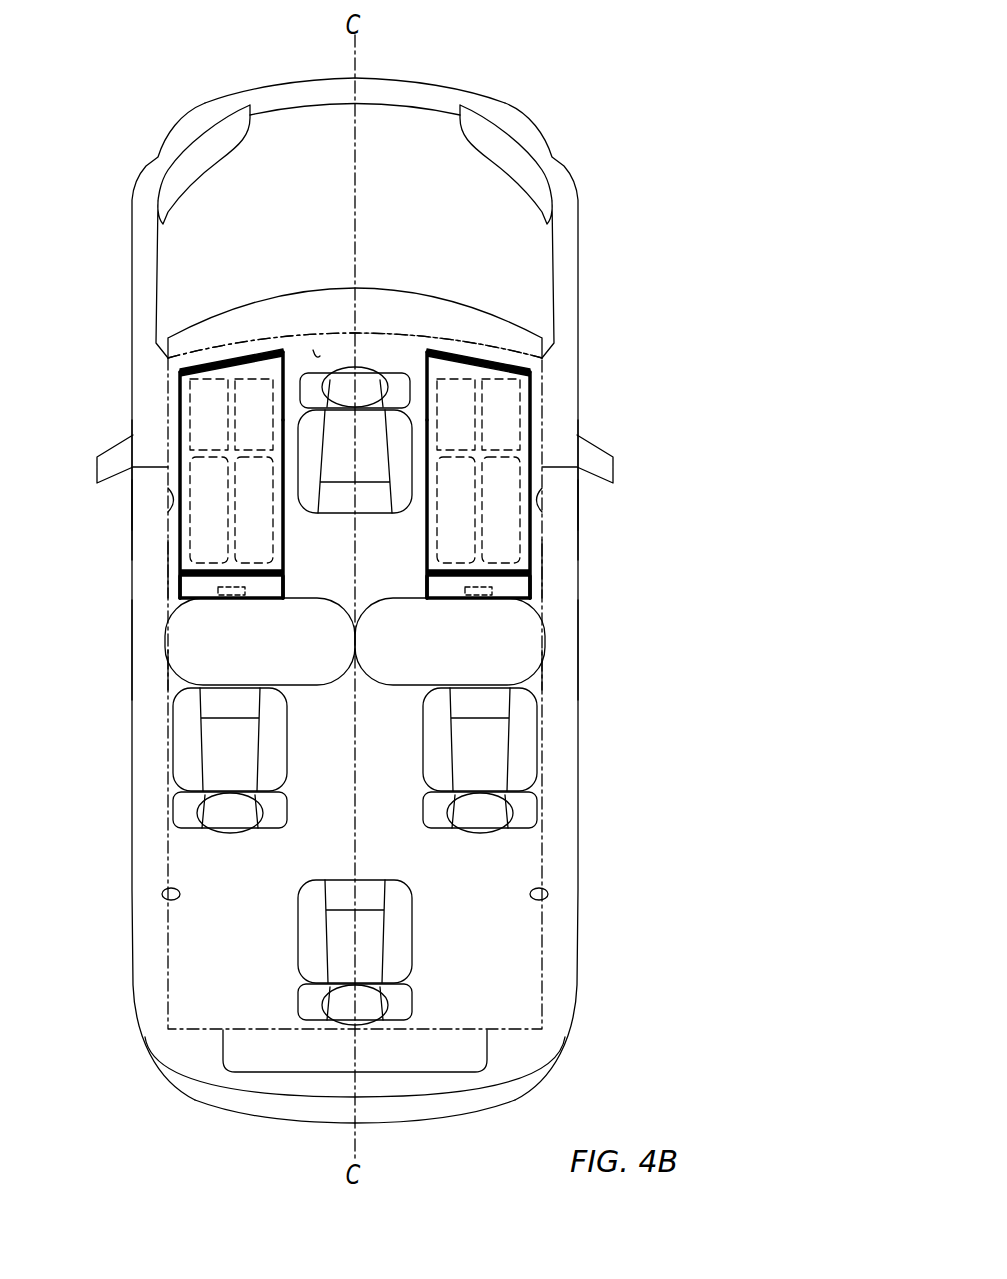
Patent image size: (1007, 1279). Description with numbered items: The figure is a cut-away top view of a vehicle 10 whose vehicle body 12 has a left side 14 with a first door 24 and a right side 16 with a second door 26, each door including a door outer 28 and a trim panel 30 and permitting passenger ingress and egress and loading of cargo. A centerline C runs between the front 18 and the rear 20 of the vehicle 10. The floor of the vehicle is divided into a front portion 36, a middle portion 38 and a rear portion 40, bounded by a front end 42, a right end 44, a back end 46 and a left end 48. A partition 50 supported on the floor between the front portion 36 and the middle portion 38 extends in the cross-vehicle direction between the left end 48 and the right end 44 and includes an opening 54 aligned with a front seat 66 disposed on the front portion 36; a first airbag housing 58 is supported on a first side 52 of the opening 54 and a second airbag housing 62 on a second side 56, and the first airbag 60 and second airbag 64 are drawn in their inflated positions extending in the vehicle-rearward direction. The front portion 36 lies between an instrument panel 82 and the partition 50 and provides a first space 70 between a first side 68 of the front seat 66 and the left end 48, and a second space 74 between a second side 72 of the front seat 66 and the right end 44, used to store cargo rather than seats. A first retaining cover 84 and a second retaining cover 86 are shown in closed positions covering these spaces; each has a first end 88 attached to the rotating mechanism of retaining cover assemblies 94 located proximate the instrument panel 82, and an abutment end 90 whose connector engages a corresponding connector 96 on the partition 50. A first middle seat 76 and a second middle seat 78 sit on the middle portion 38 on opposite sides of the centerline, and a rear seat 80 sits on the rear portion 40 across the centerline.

The vehicle 10 is at (365, 590).
The vehicle body 12 is at (355, 603).
The left side 14 is at (128, 766).
The right side 16 is at (582, 766).
The front 18 is at (380, 76).
The rear 20 is at (305, 1128).
The first door 24 is at (130, 572).
The second door 26 is at (582, 572).
The door outer 28 is at (132, 650).
The trim panel 30 is at (176, 560).
The front portion 36 is at (352, 497).
The middle portion 38 is at (355, 765).
The rear portion 40 is at (393, 952).
The front end 42 is at (322, 354).
The right end 44 is at (540, 495).
The back end 46 is at (430, 1018).
The left end 48 is at (170, 495).
The partition 50 is at (176, 590).
The first side 52 is at (357, 448).
The opening 54 is at (365, 600).
The second side 56 is at (506, 505).
The first airbag housing 58 is at (250, 593).
The first airbag 60 is at (175, 676).
The second airbag housing 62 is at (460, 593).
The second airbag 64 is at (535, 676).
The front seat 66 is at (348, 408).
The first side 68 is at (296, 420).
The first space 70 is at (236, 456).
The second side 72 is at (414, 418).
The second space 74 is at (474, 456).
The first middle seat 76 is at (290, 815).
The second middle seat 78 is at (421, 815).
The rear seat 80 is at (417, 1002).
The instrument panel 82 is at (203, 345).
The first retaining cover 84 is at (172, 435).
The second retaining cover 86 is at (538, 435).
The first end 88 is at (242, 361).
The abutment end 90 is at (230, 568).
The retaining cover assemblies 94 is at (242, 350).
The corresponding connector 96 is at (205, 579).